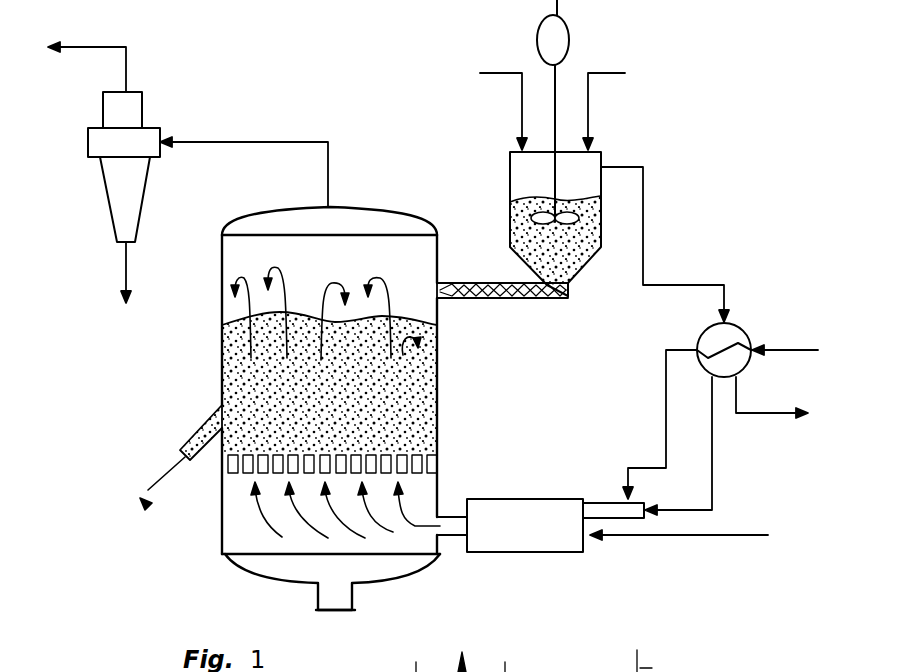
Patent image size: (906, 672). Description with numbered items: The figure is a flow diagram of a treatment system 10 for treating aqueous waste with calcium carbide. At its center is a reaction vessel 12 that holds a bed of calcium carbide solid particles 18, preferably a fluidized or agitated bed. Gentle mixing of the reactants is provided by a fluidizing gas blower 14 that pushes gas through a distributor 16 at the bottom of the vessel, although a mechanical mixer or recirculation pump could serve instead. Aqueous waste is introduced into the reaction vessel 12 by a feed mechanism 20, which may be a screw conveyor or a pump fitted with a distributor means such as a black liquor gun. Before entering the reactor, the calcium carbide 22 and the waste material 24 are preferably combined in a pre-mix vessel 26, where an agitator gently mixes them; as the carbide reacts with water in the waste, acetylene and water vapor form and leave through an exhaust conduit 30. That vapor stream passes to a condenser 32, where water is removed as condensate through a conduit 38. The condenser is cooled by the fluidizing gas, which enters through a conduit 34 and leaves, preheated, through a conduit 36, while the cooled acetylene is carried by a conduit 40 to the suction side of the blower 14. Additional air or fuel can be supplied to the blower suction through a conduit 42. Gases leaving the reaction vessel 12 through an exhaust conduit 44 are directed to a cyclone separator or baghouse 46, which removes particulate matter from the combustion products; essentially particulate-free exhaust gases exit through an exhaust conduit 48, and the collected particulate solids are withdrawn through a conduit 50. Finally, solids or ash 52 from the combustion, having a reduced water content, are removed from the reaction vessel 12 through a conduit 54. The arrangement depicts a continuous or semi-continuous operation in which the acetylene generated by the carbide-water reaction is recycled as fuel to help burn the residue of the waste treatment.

The treatment system 10 is at (180, 525).
The reaction vessel 12 is at (232, 322).
The fluidizing gas blower 14 is at (542, 537).
The distributor 16 is at (443, 455).
The bed of calcium carbide solid particles 18 is at (436, 375).
The feed mechanism 20 is at (522, 298).
The calcium carbide 22 is at (497, 73).
The waste material 24 is at (606, 73).
The pre-mix vessel 26 is at (510, 190).
The exhaust conduit 30 is at (676, 285).
The condenser 32 is at (738, 326).
The conduit 34 is at (795, 349).
The conduit 36 is at (666, 396).
The conduit 38 is at (783, 413).
The conduit 40 is at (712, 464).
The conduit 42 is at (710, 535).
The exhaust conduit 44 is at (246, 142).
The cyclone separator or baghouse 46 is at (103, 102).
The exhaust conduit 48 is at (127, 58).
The conduit 50 is at (127, 268).
The solids or ash 52 is at (163, 478).
The conduit 54 is at (200, 428).